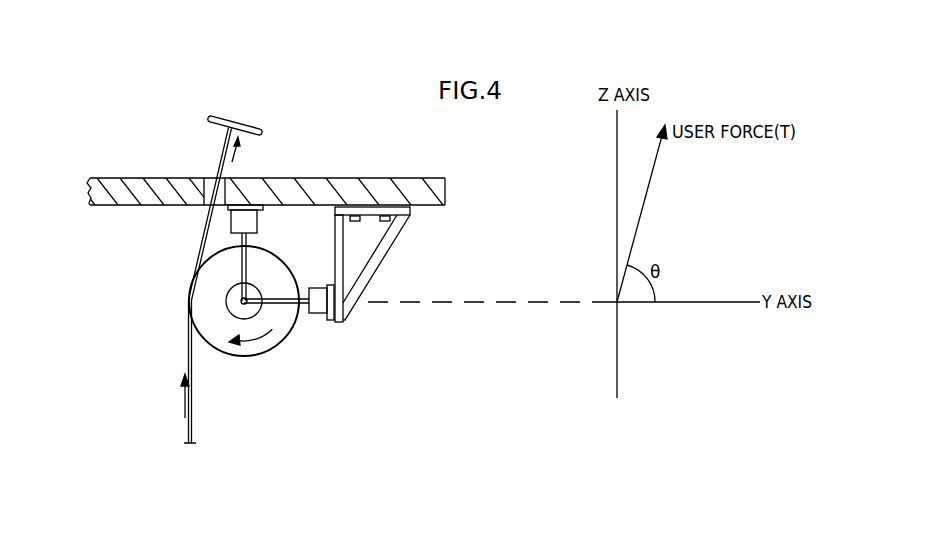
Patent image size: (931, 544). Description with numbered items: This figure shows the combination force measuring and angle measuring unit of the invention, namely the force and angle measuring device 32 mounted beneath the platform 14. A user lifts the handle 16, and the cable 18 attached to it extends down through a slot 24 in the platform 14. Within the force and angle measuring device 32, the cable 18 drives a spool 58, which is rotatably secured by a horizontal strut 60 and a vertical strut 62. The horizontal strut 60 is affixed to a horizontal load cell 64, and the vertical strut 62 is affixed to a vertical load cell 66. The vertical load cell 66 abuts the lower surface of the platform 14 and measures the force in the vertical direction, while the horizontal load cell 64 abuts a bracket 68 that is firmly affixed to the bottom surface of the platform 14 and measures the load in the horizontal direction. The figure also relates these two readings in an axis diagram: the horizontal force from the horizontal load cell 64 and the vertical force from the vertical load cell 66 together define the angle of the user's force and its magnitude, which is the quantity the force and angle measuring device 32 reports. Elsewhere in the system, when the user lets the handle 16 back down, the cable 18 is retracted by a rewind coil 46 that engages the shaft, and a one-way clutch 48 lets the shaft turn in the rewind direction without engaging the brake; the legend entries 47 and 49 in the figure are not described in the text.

The platform 14 is at (133, 178).
The handle 16 is at (244, 122).
The cable 18 is at (196, 426).
The slot 24 is at (207, 178).
The force and angle measuring device 32 is at (275, 355).
The spool 58 is at (240, 348).
The horizontal strut 60 is at (290, 293).
The vertical strut 62 is at (250, 258).
The horizontal load cell 64 is at (318, 318).
The vertical load cell 66 is at (258, 218).
The bracket 68 is at (405, 231).
The rewind coil 46 is at (640, 433).
The FZ force from Z-load cell 47 is at (640, 460).
The one-way clutch 48 is at (607, 489).
The user force T 49 is at (633, 520).